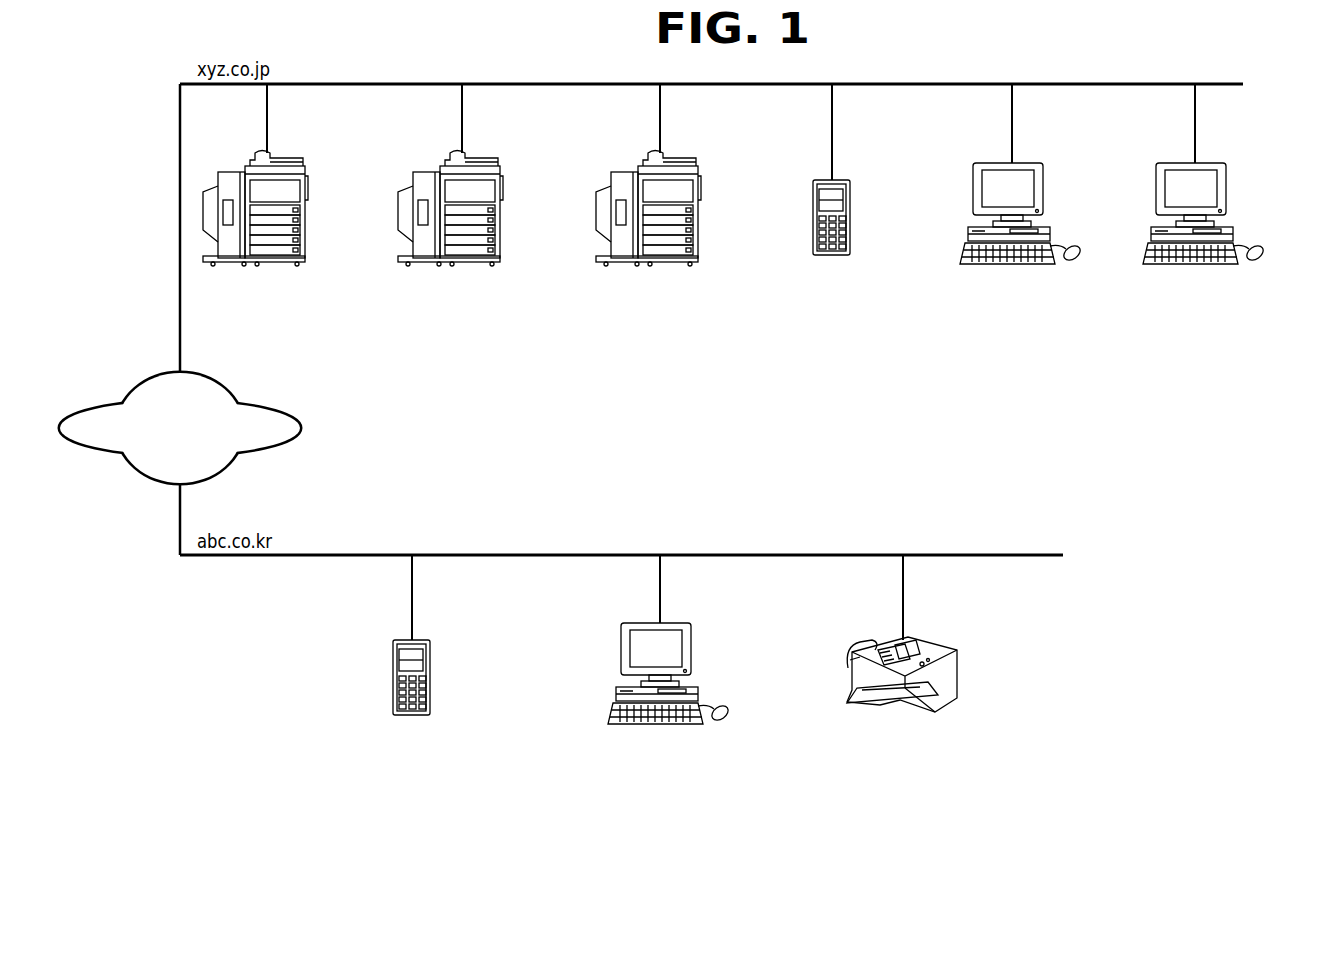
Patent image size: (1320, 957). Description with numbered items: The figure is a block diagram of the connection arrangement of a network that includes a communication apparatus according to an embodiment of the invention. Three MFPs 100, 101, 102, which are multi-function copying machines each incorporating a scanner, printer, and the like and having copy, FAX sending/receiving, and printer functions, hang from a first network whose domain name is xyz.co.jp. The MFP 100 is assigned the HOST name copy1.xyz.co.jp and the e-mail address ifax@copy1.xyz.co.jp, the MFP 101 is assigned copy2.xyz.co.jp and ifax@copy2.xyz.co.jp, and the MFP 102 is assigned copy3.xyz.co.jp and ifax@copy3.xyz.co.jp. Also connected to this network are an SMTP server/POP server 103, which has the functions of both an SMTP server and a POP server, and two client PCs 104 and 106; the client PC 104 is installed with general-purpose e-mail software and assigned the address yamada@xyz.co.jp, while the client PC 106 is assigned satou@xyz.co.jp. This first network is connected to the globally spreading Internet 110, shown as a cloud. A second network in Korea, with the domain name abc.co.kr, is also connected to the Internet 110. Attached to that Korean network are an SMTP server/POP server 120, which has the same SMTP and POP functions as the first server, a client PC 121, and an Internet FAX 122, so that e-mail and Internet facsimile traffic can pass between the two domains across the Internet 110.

The MFP 100 is at (303, 158).
The MFP 101 is at (498, 158).
The MFP 102 is at (698, 158).
The SMTP server/POP server 103 is at (850, 180).
The client PC 104 is at (1035, 163).
The client PC 106 is at (1222, 163).
The Internet 110 is at (146, 374).
The SMTP server/POP server 120 is at (430, 640).
The client PC 121 is at (696, 623).
The Internet FAX 122 is at (953, 641).